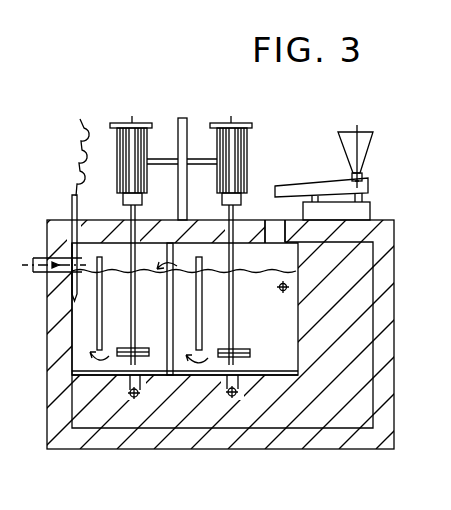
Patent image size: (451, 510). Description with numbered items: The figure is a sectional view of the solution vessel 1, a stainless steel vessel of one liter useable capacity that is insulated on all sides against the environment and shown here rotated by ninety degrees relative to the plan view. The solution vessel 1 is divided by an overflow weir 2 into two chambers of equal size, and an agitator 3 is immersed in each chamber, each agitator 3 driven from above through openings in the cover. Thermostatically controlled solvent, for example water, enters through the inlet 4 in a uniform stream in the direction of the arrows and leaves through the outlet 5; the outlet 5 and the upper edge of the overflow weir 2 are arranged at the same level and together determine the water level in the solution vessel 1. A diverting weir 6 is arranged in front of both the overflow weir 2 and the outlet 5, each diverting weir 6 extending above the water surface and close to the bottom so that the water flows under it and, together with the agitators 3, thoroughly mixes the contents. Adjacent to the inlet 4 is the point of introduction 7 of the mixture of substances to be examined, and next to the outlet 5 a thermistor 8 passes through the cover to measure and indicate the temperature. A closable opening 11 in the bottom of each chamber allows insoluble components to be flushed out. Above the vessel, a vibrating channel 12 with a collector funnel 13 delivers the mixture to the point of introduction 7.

The solution vessel 1 is at (77, 331).
The overflow weir 2 is at (172, 321).
The agitator 3 is at (141, 353).
The inlet 4 is at (279, 287).
The outlet 5 is at (40, 256).
The diverting weir 6 is at (100, 310).
The point of introduction 7 is at (275, 232).
The thermistor 8 is at (71, 206).
The closable opening 11 is at (225, 396).
The vibrating channel 12 is at (318, 186).
The collector funnel 13 is at (350, 140).